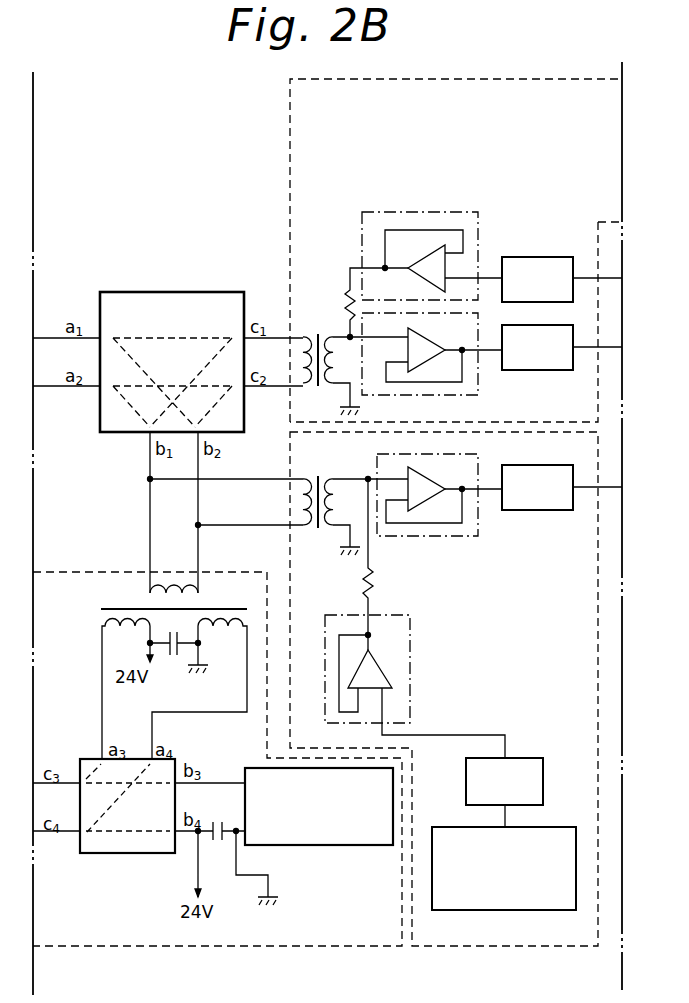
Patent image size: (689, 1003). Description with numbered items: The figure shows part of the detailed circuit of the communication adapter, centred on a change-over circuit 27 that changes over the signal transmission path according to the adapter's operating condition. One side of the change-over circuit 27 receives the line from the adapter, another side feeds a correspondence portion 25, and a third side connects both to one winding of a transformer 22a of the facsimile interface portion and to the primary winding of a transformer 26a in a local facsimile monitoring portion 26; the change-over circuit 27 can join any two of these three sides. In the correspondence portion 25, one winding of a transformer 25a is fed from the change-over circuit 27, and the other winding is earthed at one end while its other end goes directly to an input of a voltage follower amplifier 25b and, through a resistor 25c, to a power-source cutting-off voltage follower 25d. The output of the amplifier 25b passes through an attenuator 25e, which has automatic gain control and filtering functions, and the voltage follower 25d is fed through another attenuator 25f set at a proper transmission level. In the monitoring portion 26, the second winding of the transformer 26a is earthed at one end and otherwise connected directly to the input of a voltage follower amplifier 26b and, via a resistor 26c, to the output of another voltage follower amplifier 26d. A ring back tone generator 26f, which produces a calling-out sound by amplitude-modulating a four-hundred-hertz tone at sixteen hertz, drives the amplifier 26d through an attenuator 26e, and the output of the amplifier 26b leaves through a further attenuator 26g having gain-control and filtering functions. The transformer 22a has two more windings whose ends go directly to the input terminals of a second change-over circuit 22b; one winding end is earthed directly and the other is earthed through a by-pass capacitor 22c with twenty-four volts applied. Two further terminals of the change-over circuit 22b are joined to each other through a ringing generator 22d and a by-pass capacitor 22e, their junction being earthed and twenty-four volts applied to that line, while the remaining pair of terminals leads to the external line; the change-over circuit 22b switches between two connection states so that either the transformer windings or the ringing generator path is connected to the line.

The change-over circuit 27 is at (206, 292).
The correspondence portion 25 is at (290, 128).
The transformer 25a is at (320, 330).
The voltage follower amplifier 25b is at (445, 395).
The resistor 25c is at (343, 290).
The voltage follower amplifier 25d is at (440, 210).
The attenuator 25e is at (540, 370).
The attenuator 25f is at (525, 257).
The local facsimile monitoring portion 26 is at (463, 946).
The transformer 26a is at (318, 530).
The voltage follower amplifier 26b is at (445, 536).
The resistor 26c is at (376, 590).
The voltage follower amplifier 26d is at (410, 655).
The attenuator 26e is at (525, 758).
The ring back tone generator 26f is at (475, 910).
The attenuator 26g is at (543, 510).
The transformer 22a is at (113, 608).
The change-over circuit 22b is at (100, 853).
The by-pass capacitor 22c is at (176, 656).
The ringing generator 22d is at (258, 768).
The by-pass capacitor 22e is at (216, 841).